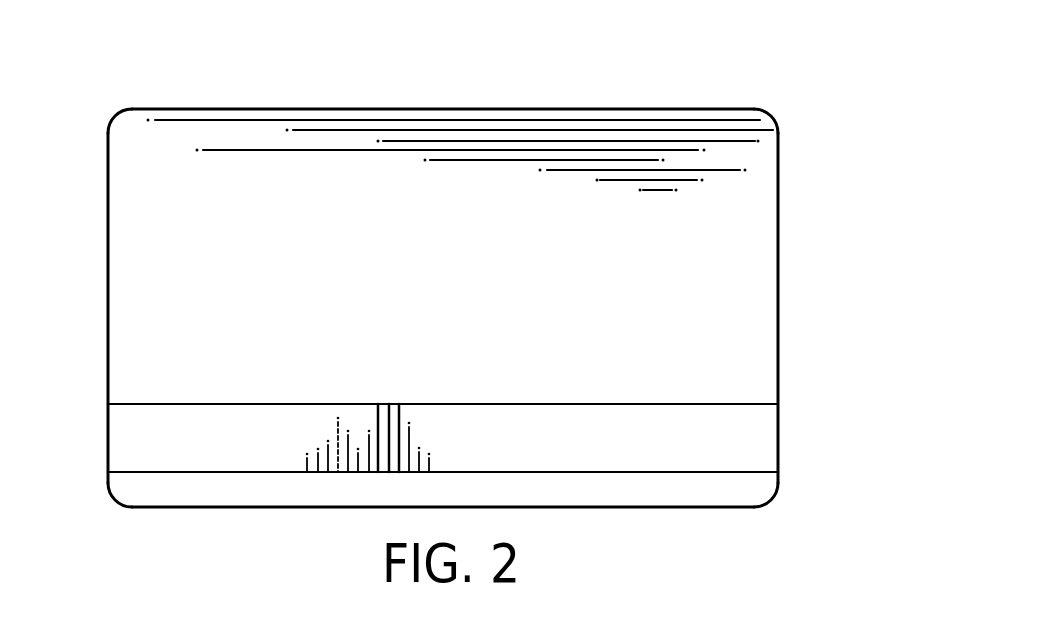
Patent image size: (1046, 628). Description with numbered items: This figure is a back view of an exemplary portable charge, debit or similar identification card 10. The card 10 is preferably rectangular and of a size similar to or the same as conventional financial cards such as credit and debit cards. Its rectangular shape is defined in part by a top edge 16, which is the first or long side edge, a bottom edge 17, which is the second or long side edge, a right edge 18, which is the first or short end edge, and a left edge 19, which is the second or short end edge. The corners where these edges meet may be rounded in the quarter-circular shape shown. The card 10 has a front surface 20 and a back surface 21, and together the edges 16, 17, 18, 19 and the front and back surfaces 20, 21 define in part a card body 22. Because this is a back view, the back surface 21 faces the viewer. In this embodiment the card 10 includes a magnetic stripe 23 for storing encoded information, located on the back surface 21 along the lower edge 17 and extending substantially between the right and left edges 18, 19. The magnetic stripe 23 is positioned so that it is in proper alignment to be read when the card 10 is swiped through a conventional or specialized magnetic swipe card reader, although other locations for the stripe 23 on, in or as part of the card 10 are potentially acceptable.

The card 10 is at (662, 60).
The top edge 16 is at (501, 108).
The bottom edge 17 is at (308, 507).
The right edge 18 is at (108, 238).
The left edge 19 is at (780, 310).
The front surface 20 is at (780, 150).
The back surface 21 is at (738, 207).
The card body 22 is at (722, 348).
The magnetic stripe 23 is at (585, 443).